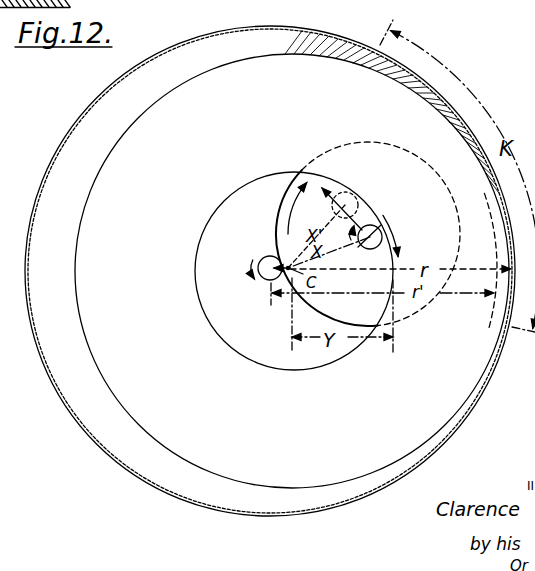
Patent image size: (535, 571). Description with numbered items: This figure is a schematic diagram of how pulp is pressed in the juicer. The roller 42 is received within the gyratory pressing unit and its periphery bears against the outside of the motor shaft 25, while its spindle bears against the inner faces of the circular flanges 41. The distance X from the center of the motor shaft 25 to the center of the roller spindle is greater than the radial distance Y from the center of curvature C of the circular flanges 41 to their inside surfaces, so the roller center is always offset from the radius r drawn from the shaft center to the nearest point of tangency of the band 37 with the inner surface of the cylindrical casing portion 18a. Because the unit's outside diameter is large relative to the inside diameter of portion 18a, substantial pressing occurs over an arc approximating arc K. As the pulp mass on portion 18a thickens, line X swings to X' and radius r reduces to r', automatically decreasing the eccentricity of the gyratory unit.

The cylindrical portion of member 18 18a is at (446, 441).
The band 37 is at (297, 480).
The circular flanges 41 is at (357, 347).
The roller 42 is at (283, 199).
The motor shaft 25 is at (268, 257).